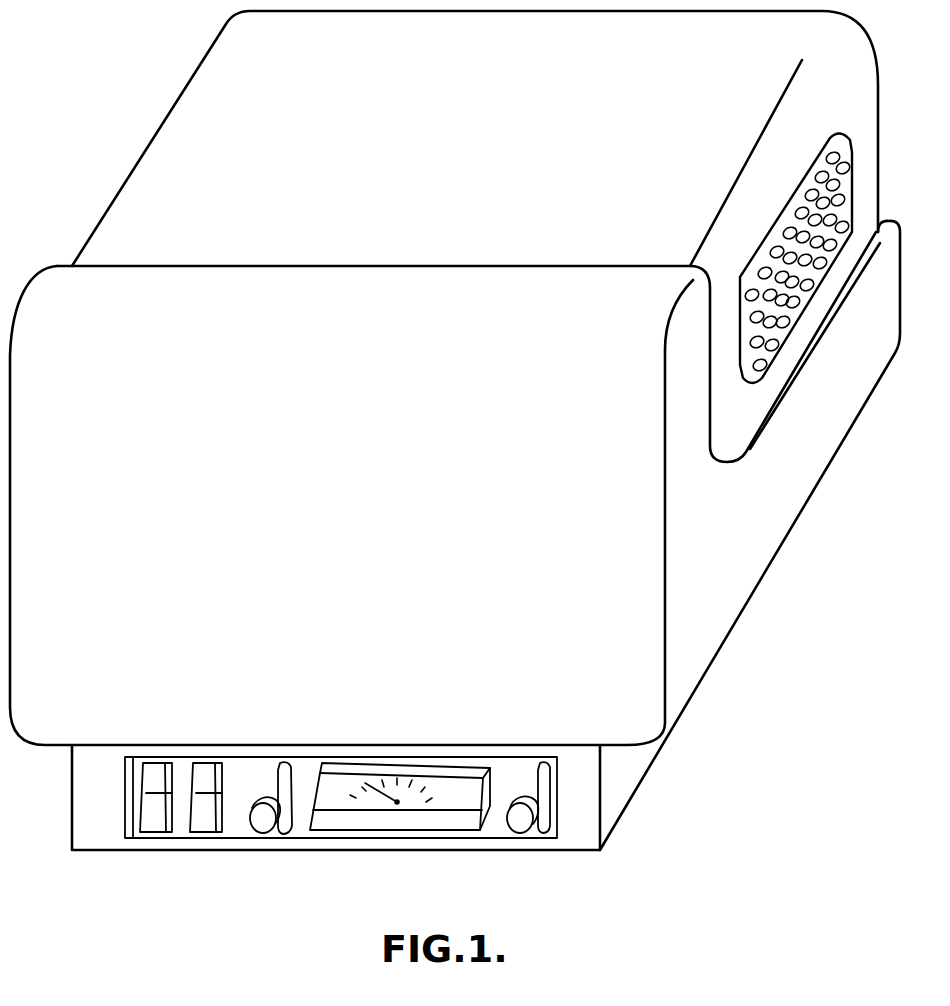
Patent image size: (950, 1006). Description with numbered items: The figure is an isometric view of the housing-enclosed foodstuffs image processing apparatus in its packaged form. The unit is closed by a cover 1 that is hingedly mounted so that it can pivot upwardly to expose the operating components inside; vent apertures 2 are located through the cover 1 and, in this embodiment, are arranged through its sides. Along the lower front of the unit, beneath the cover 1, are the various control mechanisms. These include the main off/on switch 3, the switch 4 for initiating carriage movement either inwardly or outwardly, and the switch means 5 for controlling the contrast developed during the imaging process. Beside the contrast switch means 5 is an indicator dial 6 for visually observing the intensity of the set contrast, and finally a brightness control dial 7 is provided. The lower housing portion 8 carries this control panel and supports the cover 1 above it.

The cover 1 is at (372, 462).
The vent apertures 2 is at (852, 188).
The main off/on switch 3 is at (160, 824).
The carriage movement switch 4 is at (206, 824).
The contrast control switch means 5 is at (265, 831).
The indicator dial 6 is at (420, 821).
The brightness control dial 7 is at (534, 829).
The base housing 8 is at (618, 787).